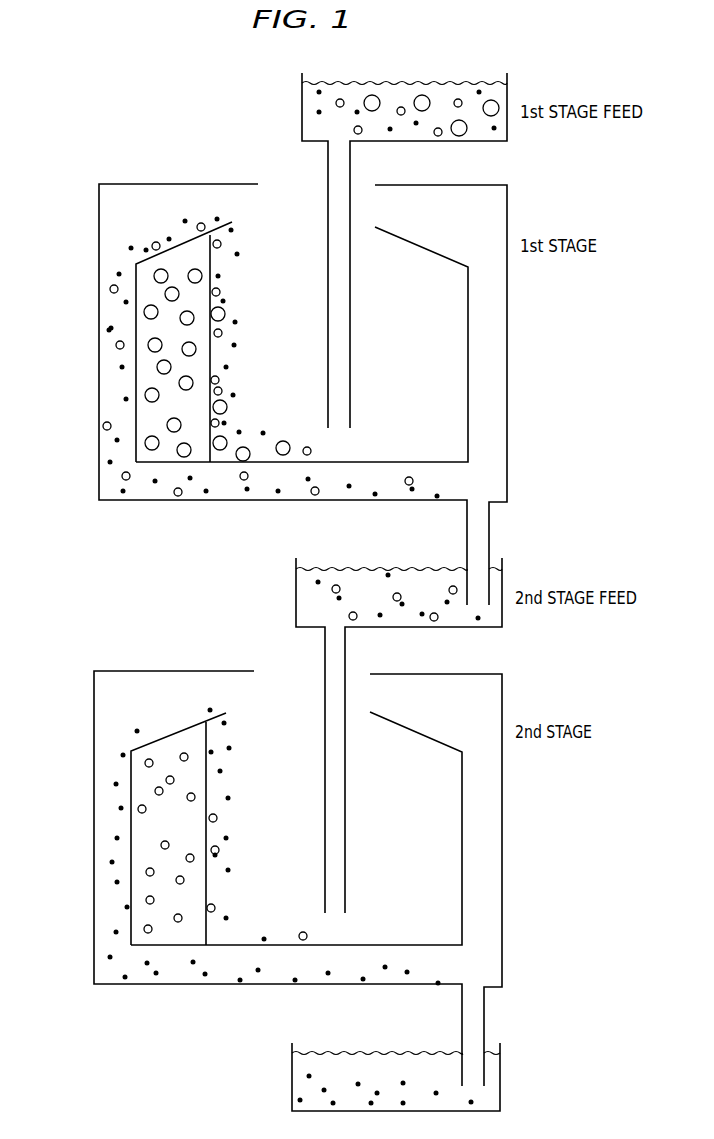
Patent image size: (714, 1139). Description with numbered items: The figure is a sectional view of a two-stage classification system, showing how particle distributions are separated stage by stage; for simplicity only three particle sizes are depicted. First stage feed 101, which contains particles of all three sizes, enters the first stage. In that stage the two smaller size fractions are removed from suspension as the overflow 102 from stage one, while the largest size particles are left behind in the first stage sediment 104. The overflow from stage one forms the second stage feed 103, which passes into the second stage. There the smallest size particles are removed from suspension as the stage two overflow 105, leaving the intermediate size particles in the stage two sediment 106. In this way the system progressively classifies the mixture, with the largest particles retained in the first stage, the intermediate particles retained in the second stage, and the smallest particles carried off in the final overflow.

The first stage feed 101 is at (507, 130).
The overflow from stage one 102 is at (157, 222).
The second stage feed 103 is at (502, 616).
The first stage sediment 104 is at (150, 345).
The stage two overflow 105 is at (93, 803).
The stage two sediment 106 is at (145, 833).